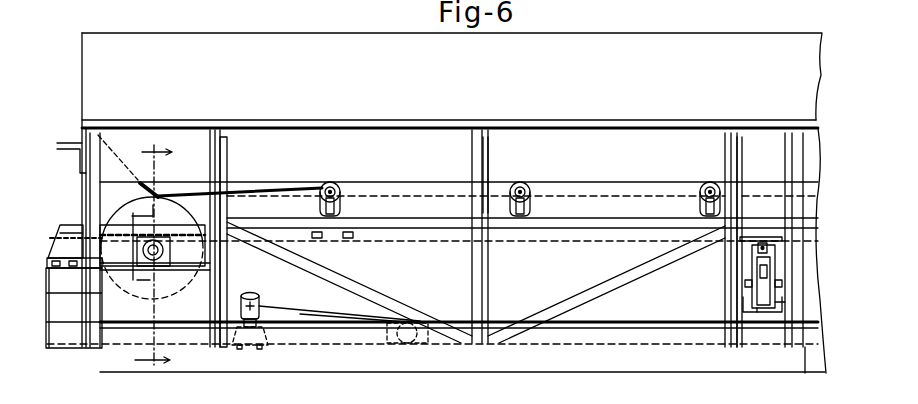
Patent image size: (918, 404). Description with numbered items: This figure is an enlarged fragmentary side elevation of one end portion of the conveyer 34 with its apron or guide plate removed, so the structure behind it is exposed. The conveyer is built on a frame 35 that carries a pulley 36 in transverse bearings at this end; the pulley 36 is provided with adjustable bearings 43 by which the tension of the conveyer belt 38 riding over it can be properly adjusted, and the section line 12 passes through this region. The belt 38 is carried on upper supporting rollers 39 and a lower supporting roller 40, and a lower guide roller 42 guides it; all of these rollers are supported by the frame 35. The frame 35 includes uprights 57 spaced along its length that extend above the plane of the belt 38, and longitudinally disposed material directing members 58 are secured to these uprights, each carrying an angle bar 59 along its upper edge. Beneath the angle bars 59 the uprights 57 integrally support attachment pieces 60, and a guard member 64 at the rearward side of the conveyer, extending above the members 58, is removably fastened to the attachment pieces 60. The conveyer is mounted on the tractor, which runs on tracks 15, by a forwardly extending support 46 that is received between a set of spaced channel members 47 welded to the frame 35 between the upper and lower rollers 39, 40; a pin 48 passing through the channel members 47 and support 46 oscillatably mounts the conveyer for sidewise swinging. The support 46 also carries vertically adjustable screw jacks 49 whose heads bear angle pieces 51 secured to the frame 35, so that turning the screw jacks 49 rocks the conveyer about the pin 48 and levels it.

The section line 12 is at (165, 257).
The tracks 15 is at (820, 363).
The conveyer 34 is at (282, 174).
The frame 35 is at (644, 333).
The pulley 36 is at (120, 217).
The conveyer belt 38 is at (334, 317).
The upper supporting rollers 39 is at (333, 184).
The lower supporting roller 40 is at (418, 338).
The lower guide roller 42 is at (259, 304).
The adjustable bearings 43 is at (178, 226).
The support 46 is at (765, 311).
The channel members 47 is at (766, 247).
The pin 48 is at (745, 284).
The screw jacks 49 is at (755, 253).
The angle pieces 51 is at (343, 340).
The uprights 57 is at (227, 153).
The material directing members 58 is at (398, 142).
The angle bar 59 is at (565, 122).
The attachment pieces 60 is at (222, 168).
The guard member 64 is at (92, 87).